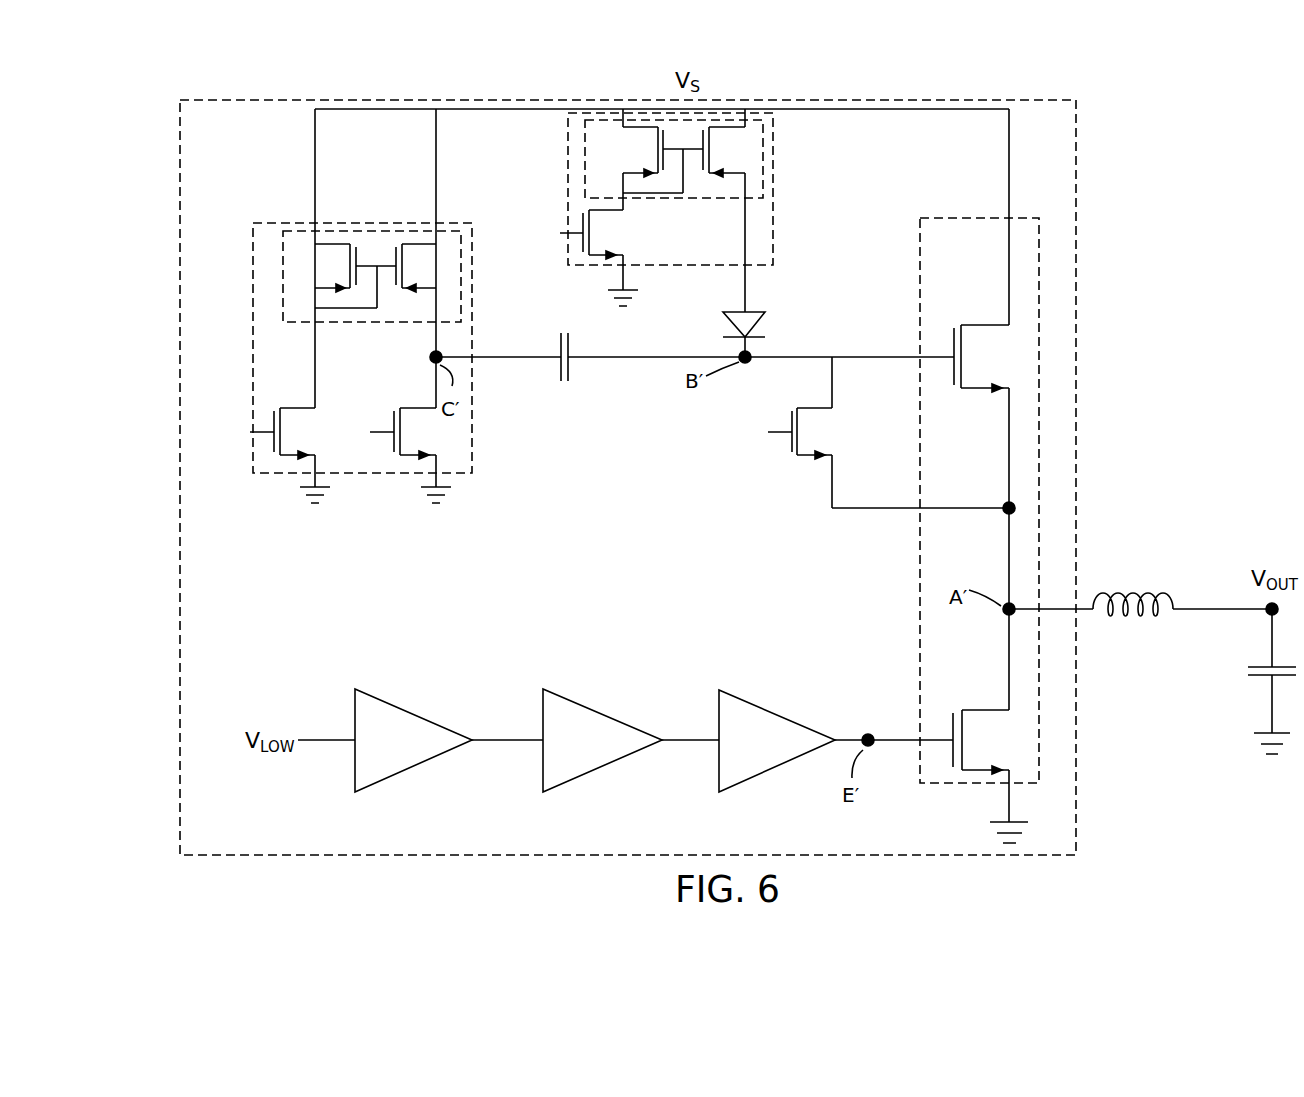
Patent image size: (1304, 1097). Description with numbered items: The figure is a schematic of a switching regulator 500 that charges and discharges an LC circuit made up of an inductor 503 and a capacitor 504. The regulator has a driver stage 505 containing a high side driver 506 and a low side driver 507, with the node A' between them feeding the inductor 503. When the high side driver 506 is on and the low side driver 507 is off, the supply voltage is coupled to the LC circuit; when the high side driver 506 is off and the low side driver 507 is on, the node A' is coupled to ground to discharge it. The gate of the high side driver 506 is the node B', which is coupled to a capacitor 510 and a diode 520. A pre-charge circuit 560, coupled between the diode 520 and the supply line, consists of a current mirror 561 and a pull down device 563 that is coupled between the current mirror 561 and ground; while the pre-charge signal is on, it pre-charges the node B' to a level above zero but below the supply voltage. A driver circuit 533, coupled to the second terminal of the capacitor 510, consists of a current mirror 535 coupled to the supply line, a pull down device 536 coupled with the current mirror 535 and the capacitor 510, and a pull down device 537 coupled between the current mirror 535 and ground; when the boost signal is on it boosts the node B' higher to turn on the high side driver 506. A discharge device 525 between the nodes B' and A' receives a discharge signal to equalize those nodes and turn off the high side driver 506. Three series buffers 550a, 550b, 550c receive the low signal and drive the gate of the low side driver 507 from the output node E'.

The switching regulator 500 is at (188, 92).
The inductor 503 is at (1181, 597).
The capacitor 504 is at (1247, 687).
The driver stage 505 is at (980, 216).
The high side driver 506 is at (967, 321).
The low side driver 507 is at (967, 707).
The capacitor 510 is at (553, 339).
The diode 520 is at (772, 331).
The discharge device 525 is at (789, 469).
The driver circuit 533 is at (477, 416).
The current mirror 535 is at (468, 272).
The pull down device 536 is at (416, 396).
The pull down device 537 is at (300, 396).
The buffer 550a is at (416, 753).
The buffer 550b is at (604, 753).
The buffer 550c is at (779, 753).
The pre-charge circuit 560 is at (776, 222).
The current mirror 561 is at (773, 153).
The pull down device 563 is at (642, 241).